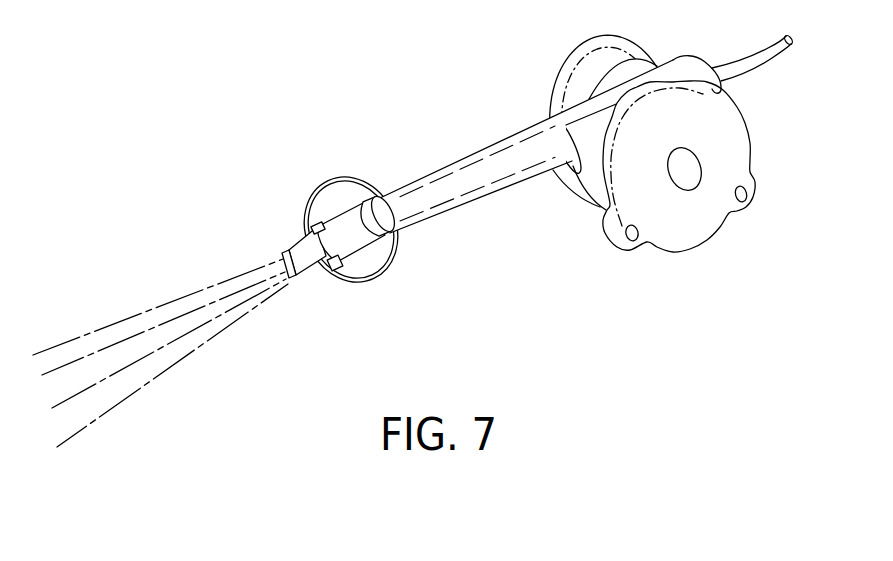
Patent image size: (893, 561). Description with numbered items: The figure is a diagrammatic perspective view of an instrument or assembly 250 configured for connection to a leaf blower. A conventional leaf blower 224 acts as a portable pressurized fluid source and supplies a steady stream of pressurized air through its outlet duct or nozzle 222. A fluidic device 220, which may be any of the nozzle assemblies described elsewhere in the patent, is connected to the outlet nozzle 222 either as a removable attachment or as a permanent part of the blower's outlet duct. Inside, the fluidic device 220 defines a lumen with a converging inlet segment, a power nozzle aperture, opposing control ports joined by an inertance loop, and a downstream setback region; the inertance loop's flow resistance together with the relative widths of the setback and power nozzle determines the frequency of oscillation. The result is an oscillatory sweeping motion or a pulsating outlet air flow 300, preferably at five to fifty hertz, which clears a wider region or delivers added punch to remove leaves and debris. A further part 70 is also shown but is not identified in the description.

The instrument or assembly 250 is at (479, 93).
The outlet air flow 300 is at (225, 283).
The fluidic device 220 is at (308, 286).
The ring 70 is at (379, 268).
The outlet nozzle 222 is at (460, 197).
The leaf blower 224 is at (587, 185).